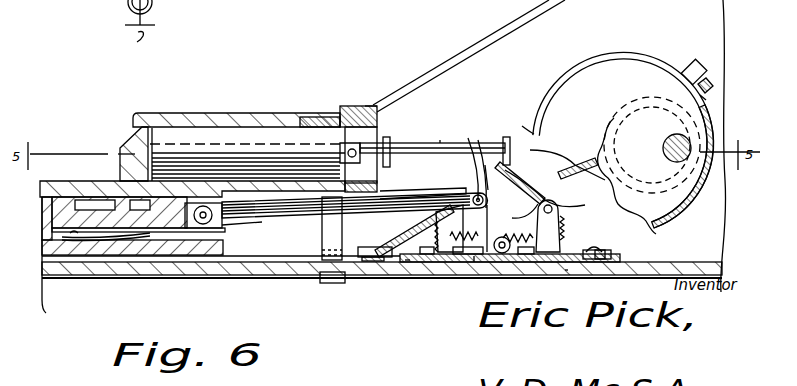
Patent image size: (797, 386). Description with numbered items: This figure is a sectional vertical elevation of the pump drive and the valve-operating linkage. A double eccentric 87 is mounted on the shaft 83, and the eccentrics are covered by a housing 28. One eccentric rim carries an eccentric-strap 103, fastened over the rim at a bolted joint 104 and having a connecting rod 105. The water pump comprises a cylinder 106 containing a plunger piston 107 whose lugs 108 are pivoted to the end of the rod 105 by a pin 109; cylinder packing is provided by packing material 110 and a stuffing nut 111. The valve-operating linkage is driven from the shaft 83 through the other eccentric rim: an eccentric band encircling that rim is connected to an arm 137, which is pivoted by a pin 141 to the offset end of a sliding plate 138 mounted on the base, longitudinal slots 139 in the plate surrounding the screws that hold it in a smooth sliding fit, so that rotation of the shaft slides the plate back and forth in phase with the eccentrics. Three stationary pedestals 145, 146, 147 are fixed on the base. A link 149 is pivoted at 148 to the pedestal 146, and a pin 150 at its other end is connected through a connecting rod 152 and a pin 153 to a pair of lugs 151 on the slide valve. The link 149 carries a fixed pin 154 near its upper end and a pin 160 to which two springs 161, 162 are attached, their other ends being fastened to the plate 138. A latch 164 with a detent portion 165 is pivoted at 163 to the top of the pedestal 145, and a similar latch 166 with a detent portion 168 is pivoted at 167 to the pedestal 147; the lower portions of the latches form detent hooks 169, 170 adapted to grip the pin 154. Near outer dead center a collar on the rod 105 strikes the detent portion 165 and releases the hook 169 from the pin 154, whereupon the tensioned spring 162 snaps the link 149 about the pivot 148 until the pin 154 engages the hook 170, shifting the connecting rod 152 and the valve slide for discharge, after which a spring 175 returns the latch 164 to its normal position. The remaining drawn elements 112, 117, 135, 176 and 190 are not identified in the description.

The housing 28 is at (521, 28).
The shaft 83 is at (672, 148).
The double eccentric 87 is at (645, 75).
The eccentric-strap 103 is at (703, 97).
The bolted joint 104 is at (712, 68).
The connecting rod 105 is at (441, 141).
The cylinder 106 is at (290, 113).
The plunger piston 107 is at (314, 128).
The lugs 108 is at (345, 149).
The pin 109 is at (380, 131).
The packing material 110 is at (328, 110).
The stuffing nut 111 is at (366, 112).
The base plate 112 is at (42, 190).
The piston rod 117 is at (398, 147).
The spring 135 is at (115, 237).
The connecting arm 137 is at (600, 172).
The sliding plate 138 is at (600, 255).
The longitudinal slots 139 is at (405, 262).
The pin 141 is at (375, 250).
The pedestal 145 is at (446, 264).
The pedestal 146 is at (494, 262).
The pedestal 147 is at (545, 262).
The pivot 148 is at (505, 262).
The link 149 is at (492, 202).
The pin 150 is at (457, 196).
The lugs 151 is at (194, 224).
The connecting rod 152 is at (425, 194).
The pin 153 is at (222, 224).
The fixed pin 154 is at (485, 165).
The pin 160 is at (521, 182).
The spring 161 is at (434, 262).
The spring 162 is at (508, 243).
The pivot pin 163 is at (446, 210).
The latch 164 is at (473, 160).
The detent portion 165 is at (523, 123).
The latch 166 is at (556, 175).
The pivot 167 is at (548, 206).
The detent portion 168 is at (501, 147).
The detent hook 169 is at (474, 265).
The detent hook 170 is at (546, 165).
The spring 175 is at (440, 214).
The spring 176 is at (568, 230).
The stop 190 is at (590, 251).